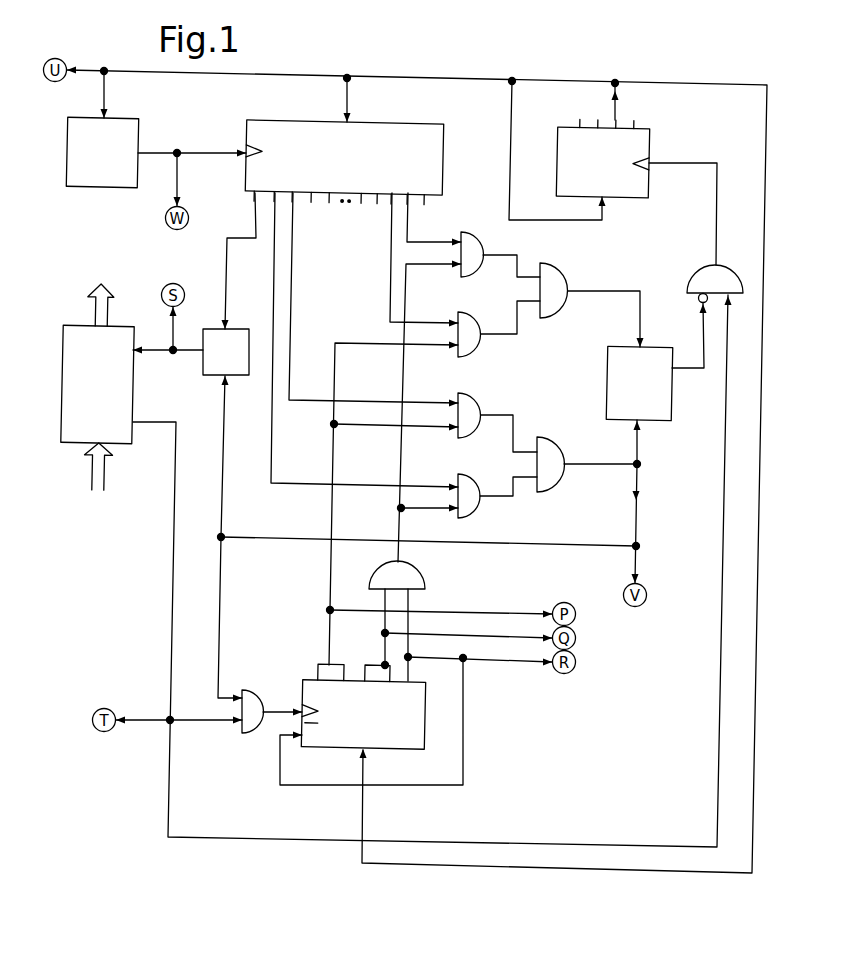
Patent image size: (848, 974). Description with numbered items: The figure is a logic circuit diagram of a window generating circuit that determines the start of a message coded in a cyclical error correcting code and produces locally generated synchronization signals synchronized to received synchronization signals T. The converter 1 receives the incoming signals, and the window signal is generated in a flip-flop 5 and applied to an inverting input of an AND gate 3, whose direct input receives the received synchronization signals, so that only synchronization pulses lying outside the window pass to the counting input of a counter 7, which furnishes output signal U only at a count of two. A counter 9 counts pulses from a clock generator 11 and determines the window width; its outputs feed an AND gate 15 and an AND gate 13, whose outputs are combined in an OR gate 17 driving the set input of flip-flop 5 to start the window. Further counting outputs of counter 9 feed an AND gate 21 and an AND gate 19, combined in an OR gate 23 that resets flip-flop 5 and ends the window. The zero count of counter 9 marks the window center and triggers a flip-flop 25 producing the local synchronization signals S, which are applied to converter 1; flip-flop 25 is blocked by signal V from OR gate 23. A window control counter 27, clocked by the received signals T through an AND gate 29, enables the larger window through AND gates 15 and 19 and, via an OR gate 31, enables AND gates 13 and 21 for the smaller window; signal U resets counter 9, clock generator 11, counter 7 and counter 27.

The data converter 1 is at (134, 378).
The AND gate 3 is at (694, 273).
The flip-flop 5 is at (673, 412).
The counter 7 is at (649, 128).
The counter 9 is at (443, 122).
The clock generator 11 is at (138, 121).
The AND gate 13 is at (484, 240).
The AND gate 15 is at (480, 316).
The OR gate 17 is at (564, 270).
The AND gate 19 is at (478, 398).
The AND gate 21 is at (475, 479).
The OR gate 23 is at (556, 487).
The flip-flop 25 is at (240, 329).
The counter 27 is at (414, 748).
The AND gate 29 is at (259, 692).
The OR gate 31 is at (425, 576).